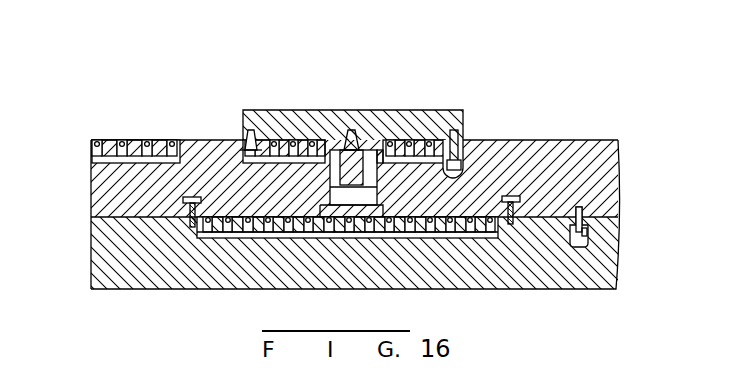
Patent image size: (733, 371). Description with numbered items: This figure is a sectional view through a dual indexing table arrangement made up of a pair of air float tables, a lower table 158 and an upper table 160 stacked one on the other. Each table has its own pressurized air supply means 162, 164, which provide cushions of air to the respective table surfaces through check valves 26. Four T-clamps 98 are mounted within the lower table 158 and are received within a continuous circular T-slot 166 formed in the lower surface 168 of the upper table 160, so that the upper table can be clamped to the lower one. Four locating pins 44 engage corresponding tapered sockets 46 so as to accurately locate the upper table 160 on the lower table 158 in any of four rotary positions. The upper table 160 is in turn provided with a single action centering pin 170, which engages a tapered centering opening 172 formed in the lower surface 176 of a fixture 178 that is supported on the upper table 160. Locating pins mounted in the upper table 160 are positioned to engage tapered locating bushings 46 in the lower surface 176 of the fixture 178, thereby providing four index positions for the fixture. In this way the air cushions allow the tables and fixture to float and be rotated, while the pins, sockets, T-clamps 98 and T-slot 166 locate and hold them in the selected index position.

The check valve 26 is at (293, 141).
The locating pin 44 is at (458, 153).
The tapered socket 46 is at (250, 132).
The T-clamp 98 is at (192, 197).
The lower table 158 is at (120, 252).
The upper table 160 is at (110, 182).
The pressurized air supply means 162 is at (412, 235).
The pressurized air supply means 164 is at (380, 150).
The T-slot 166 is at (220, 188).
The lower surface 168 is at (130, 218).
The single action centering pin 170 is at (353, 167).
The tapered centering opening 172 is at (352, 132).
The lower surface 176 is at (262, 152).
The fixture 178 is at (398, 118).